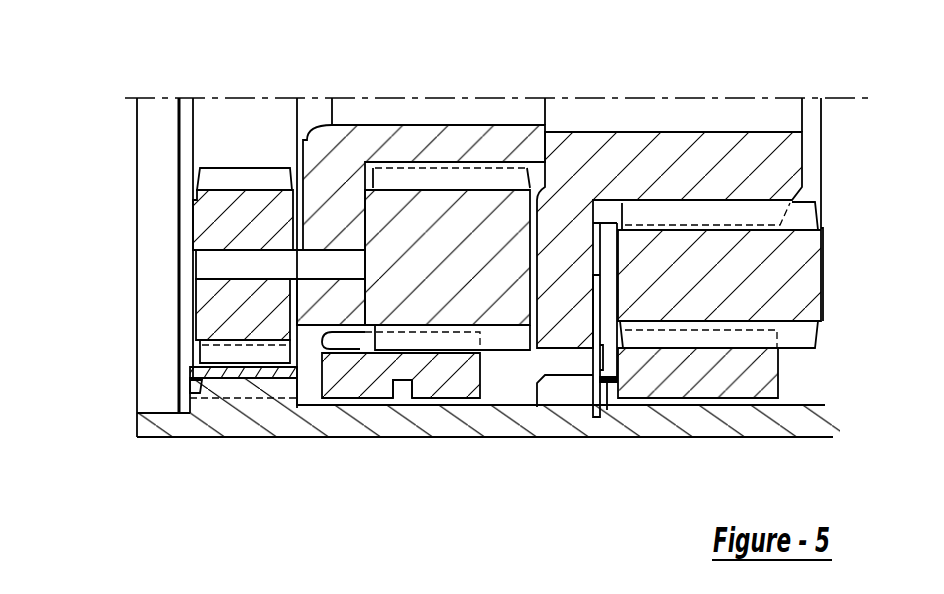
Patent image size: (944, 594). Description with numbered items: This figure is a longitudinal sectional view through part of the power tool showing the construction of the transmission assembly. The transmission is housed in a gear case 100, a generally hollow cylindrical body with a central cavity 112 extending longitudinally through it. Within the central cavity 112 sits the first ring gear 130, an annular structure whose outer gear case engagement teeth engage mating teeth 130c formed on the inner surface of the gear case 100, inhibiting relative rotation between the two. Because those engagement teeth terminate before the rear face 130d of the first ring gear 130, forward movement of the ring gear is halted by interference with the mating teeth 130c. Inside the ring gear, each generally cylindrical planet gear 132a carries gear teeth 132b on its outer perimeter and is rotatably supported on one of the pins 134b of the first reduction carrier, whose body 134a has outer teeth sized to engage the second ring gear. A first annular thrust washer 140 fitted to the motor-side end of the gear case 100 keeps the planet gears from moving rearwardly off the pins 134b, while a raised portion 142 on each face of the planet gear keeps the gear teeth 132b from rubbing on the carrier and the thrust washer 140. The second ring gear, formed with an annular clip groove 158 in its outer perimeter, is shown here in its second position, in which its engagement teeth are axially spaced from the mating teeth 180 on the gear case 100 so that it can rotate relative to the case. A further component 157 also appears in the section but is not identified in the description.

The gear case 100 is at (289, 420).
The central cavity 112 is at (157, 188).
The first ring gear 130 is at (197, 357).
The mating teeth 130c is at (232, 383).
The rear face 130d is at (200, 386).
The planet gear 132a is at (230, 216).
The gear teeth 132b is at (225, 180).
The body 134a is at (335, 172).
The pins 134b is at (212, 266).
The first annular thrust washer 140 is at (177, 137).
The raised portion 142 is at (193, 313).
The stator support 157 is at (362, 378).
The clip groove 158 is at (403, 393).
The mating teeth 180 is at (556, 390).